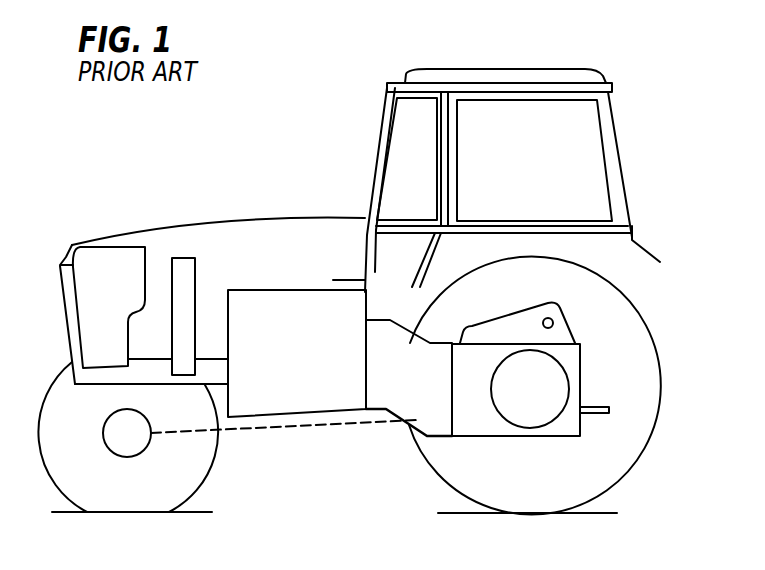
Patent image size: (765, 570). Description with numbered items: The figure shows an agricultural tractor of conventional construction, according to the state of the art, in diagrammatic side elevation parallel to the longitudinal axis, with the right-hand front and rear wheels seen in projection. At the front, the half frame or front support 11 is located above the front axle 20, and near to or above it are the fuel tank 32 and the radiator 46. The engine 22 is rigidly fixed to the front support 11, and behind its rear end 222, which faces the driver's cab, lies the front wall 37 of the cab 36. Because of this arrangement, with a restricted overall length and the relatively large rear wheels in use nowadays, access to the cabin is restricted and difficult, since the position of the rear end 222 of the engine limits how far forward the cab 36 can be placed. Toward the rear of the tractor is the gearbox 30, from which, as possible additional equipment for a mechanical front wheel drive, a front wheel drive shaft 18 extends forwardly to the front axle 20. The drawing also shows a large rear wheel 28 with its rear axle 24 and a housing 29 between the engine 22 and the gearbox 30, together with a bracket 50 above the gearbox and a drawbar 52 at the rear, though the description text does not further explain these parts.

The front support 11 is at (157, 377).
The front wheel drive shaft 18 is at (231, 431).
The front axle 20 is at (138, 445).
The engine 22 is at (287, 331).
The rear end of the engine 222 is at (366, 359).
The rear axle 24 is at (538, 416).
The rear wheel 28 is at (627, 460).
The transmission housing 29 is at (423, 385).
The gearbox 30 is at (497, 425).
The fuel tank 32 is at (118, 301).
The cab 36 is at (477, 180).
The front wall of the cab 37 is at (365, 247).
The radiator 46 is at (187, 275).
The fender bracket 50 is at (555, 322).
The drawbar 52 is at (600, 406).